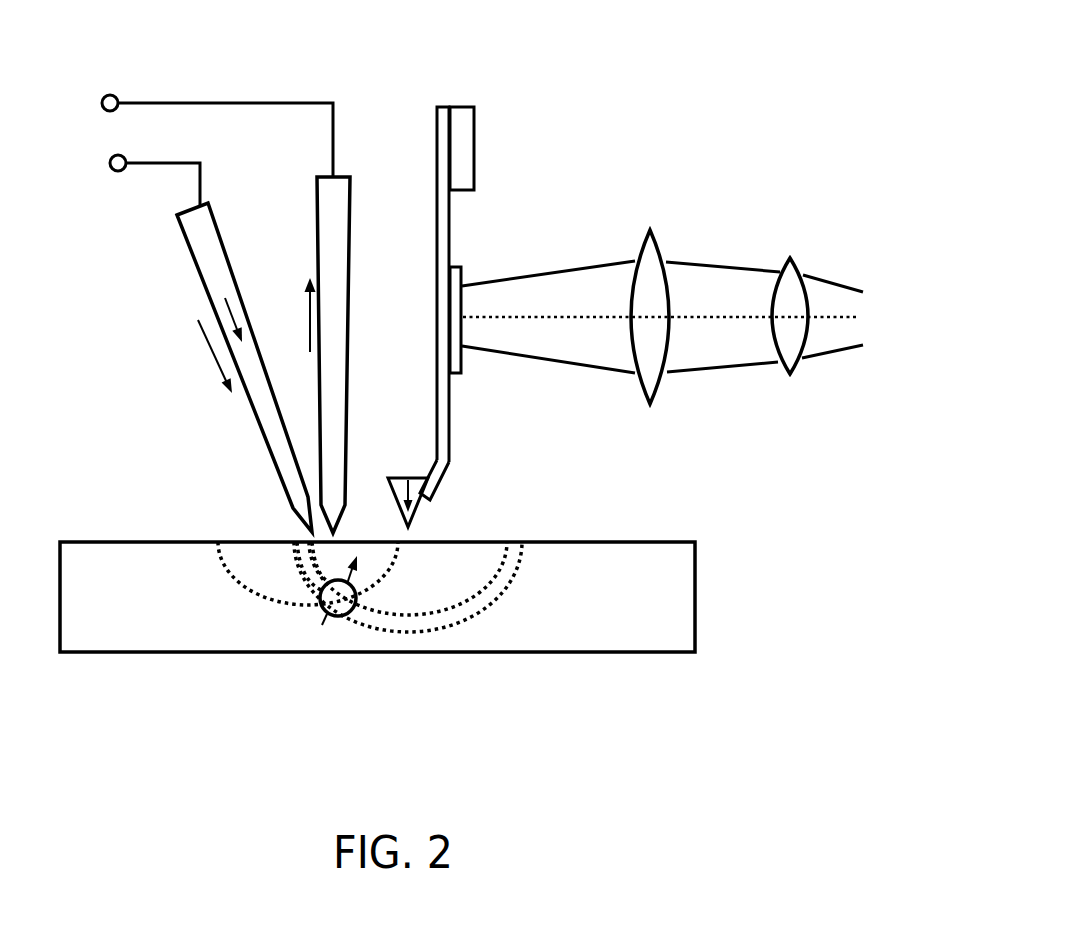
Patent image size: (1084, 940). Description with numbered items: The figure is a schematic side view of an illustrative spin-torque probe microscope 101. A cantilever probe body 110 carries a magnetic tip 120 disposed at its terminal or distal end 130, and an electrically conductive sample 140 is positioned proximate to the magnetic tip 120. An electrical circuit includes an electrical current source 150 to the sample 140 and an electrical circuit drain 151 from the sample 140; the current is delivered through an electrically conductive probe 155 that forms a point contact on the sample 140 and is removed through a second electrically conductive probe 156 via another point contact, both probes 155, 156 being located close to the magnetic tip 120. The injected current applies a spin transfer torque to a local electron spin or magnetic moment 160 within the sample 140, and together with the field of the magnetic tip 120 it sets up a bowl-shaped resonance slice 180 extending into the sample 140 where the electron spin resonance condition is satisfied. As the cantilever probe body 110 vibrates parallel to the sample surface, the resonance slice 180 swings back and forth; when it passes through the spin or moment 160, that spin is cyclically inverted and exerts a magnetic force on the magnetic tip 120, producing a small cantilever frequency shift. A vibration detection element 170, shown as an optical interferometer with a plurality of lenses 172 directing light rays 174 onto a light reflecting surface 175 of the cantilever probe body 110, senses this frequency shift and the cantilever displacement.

The spin-torque probe microscope 101 is at (322, 66).
The cantilever probe body 110 is at (450, 232).
The magnetic tip 120 is at (410, 525).
The terminal or distal end 130 is at (414, 459).
The electrically conductive sample 140 is at (165, 613).
The electrical current source 150 is at (167, 165).
The electrical circuit drain 151 is at (232, 102).
The electrically conductive probe 155 is at (258, 425).
The electrically conductive probe 156 is at (345, 350).
The local electron spin or magnetic moment 160 is at (330, 617).
The vibration detection element 170 is at (686, 200).
The lenses 172 is at (786, 378).
The light rays 174 is at (727, 265).
The light reflecting surface 175 is at (461, 375).
The resonance slice 180 is at (478, 626).